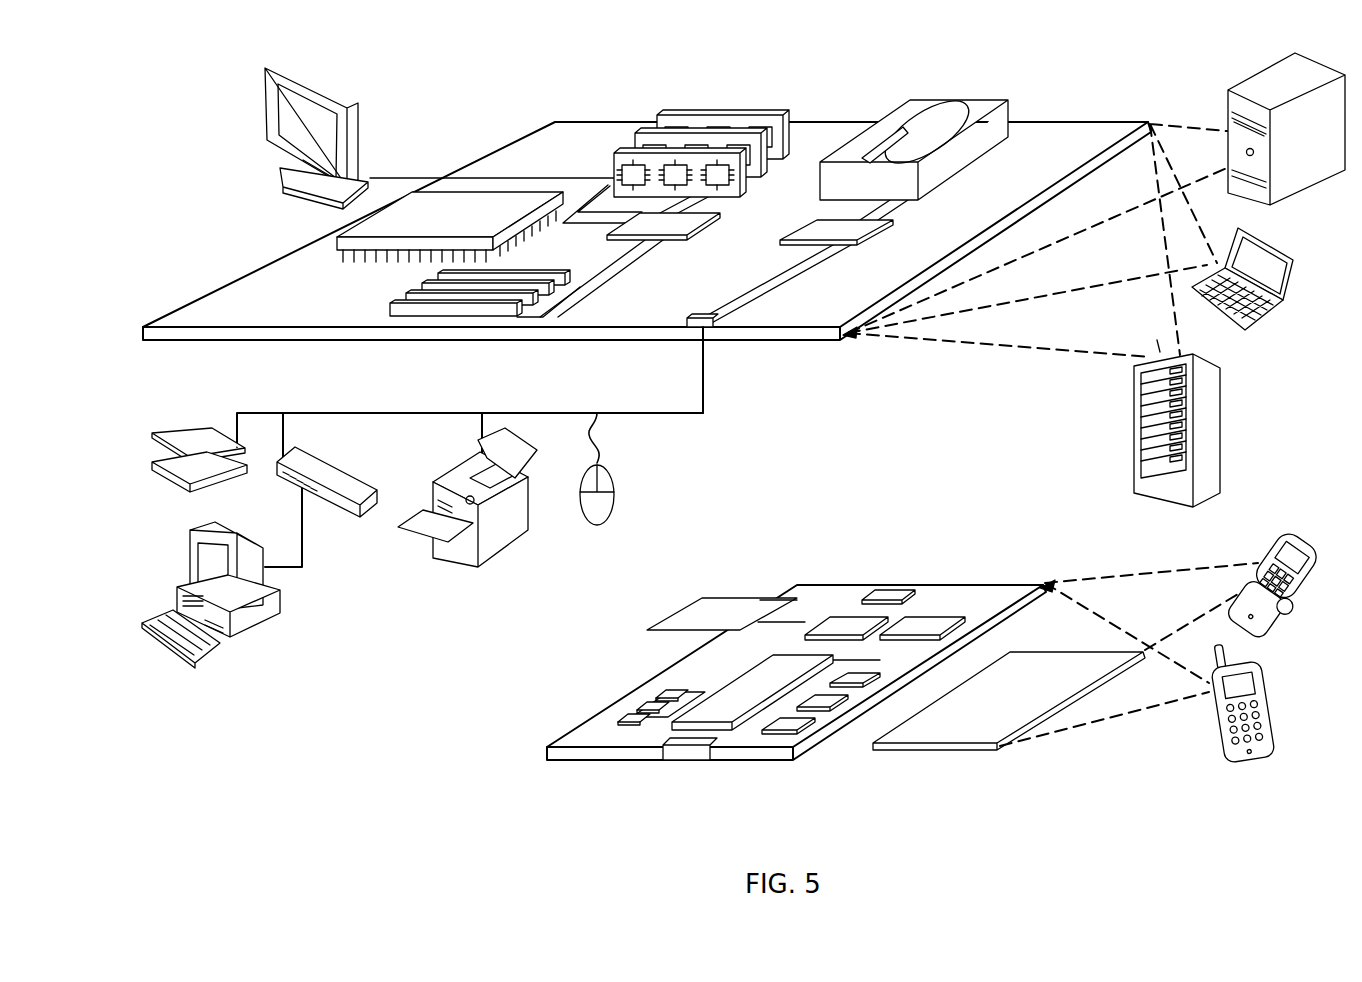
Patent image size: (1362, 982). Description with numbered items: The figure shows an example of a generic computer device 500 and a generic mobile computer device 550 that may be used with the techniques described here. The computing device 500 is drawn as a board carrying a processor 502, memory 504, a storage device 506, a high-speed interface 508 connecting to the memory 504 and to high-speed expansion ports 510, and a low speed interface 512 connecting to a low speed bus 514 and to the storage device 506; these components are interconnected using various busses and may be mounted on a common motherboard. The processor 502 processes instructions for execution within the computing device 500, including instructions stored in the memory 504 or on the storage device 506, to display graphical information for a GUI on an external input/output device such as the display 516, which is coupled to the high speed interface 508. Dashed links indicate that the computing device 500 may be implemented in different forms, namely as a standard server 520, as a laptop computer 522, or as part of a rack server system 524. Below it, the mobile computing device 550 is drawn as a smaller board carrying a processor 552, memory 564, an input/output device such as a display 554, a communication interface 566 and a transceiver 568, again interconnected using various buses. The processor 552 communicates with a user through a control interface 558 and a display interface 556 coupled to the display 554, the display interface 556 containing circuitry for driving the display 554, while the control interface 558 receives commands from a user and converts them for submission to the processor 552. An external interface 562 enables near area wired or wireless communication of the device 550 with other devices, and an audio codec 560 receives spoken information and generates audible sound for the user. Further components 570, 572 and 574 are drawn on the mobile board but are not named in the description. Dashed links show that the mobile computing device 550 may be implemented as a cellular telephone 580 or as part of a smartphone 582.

The generic computer device 500 is at (464, 92).
The processor 502 is at (340, 240).
The memory 504 is at (676, 117).
The storage device 506 is at (912, 102).
The high-speed interface 508 is at (640, 223).
The high-speed expansion ports 510 is at (405, 298).
The low speed interface 512 is at (817, 228).
The low speed bus 514 is at (712, 330).
The display 516 is at (272, 72).
The standard server 520 is at (1228, 108).
The laptop computer 522 is at (1294, 260).
The rack server system 524 is at (1133, 450).
The generic mobile computer device 550 is at (518, 768).
The processor 552 is at (724, 735).
The display 554 is at (985, 748).
The display interface 556 is at (795, 735).
The control interface 558 is at (840, 712).
The audio codec 560 is at (855, 690).
The external interface 562 is at (688, 762).
The memory 564 is at (630, 717).
The communication interface 566 is at (845, 622).
The transceiver 568 is at (928, 618).
The antenna chip 570 is at (900, 598).
The circuit board edge 572 is at (773, 600).
The battery plate 574 is at (700, 602).
The cellular telephone 580 is at (1260, 514).
The smartphone 582 is at (1212, 735).